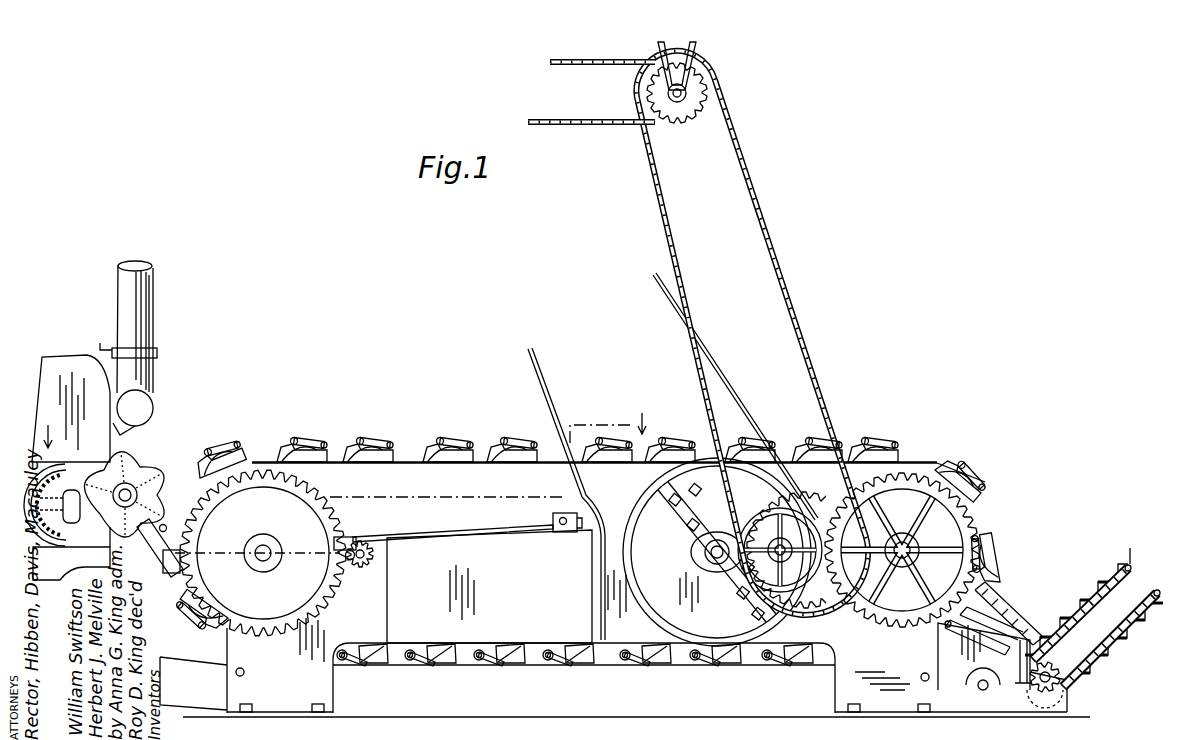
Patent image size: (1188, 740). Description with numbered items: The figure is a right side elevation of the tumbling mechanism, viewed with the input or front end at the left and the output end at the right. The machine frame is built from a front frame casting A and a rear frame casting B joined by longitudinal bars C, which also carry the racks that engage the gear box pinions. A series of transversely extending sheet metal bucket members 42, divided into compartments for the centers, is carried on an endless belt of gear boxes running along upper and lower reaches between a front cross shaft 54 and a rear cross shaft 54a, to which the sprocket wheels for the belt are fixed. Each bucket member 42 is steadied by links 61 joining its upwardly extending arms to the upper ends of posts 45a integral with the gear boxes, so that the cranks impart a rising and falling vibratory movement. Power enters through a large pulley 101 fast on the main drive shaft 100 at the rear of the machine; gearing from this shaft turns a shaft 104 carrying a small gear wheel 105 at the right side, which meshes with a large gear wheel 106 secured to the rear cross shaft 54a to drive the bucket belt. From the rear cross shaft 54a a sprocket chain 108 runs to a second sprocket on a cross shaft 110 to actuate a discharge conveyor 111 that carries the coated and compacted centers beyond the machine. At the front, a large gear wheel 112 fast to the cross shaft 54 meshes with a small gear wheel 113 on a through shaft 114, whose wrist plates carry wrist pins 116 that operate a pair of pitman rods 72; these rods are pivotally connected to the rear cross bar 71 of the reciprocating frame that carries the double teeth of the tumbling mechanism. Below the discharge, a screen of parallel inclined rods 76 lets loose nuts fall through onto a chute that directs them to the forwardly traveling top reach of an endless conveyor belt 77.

The bucket member 42 is at (290, 452).
The posts 45a is at (336, 458).
The cross shaft 54 is at (265, 545).
The rear cross shaft 54a is at (910, 547).
The links 61 is at (378, 446).
The cross bar 71 is at (562, 532).
The pitman rods 72 is at (468, 537).
The inclined rods 76 is at (1002, 619).
The endless conveyor belt 77 is at (937, 662).
The main drive shaft 100 is at (717, 552).
The pulley 101 is at (628, 543).
The shaft 104 is at (800, 550).
The small gear wheel 105 is at (797, 596).
The large gear wheel 106 is at (862, 612).
The sprocket chain 108 is at (987, 595).
The cross shaft 110 is at (1100, 629).
The discharge conveyor 111 is at (1108, 580).
The large gear wheel 112 is at (266, 637).
The small gear wheel 113 is at (375, 563).
The through shaft 114 is at (374, 556).
The wrist pins 116 is at (360, 532).
The frame casting A is at (328, 688).
The frame casting B is at (840, 688).
The longitudinal bars C is at (543, 632).